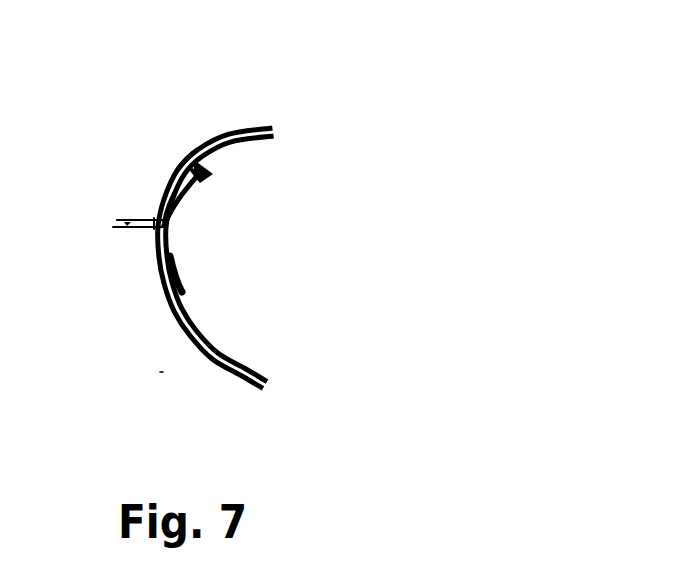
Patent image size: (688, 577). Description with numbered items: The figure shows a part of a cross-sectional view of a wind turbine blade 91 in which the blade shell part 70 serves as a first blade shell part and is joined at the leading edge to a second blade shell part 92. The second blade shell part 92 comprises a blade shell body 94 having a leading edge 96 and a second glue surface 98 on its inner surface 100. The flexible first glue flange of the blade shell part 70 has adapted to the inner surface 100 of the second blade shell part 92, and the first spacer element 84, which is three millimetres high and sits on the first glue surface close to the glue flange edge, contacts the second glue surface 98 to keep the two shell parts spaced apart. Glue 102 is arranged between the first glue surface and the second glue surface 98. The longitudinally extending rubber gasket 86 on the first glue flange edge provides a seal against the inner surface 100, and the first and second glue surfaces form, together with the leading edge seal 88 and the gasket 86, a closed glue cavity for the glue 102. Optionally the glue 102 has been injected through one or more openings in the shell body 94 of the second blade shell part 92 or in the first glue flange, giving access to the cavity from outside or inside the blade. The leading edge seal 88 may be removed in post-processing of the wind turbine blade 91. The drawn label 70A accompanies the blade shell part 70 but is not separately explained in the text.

The wind turbine blade 91 is at (208, 205).
The second blade shell part 92 is at (230, 134).
The blade shell body 94 is at (198, 150).
The inner surface 100 is at (244, 145).
The rubber gasket 86 is at (207, 172).
The first spacer element 84 is at (180, 197).
The second glue surface 98 is at (188, 170).
The glue 102 is at (167, 195).
The leading edge 96 is at (154, 228).
The blade shell part 70 is at (115, 288).
The frame member portion 70A is at (165, 289).
The leading edge seal 88 is at (158, 372).